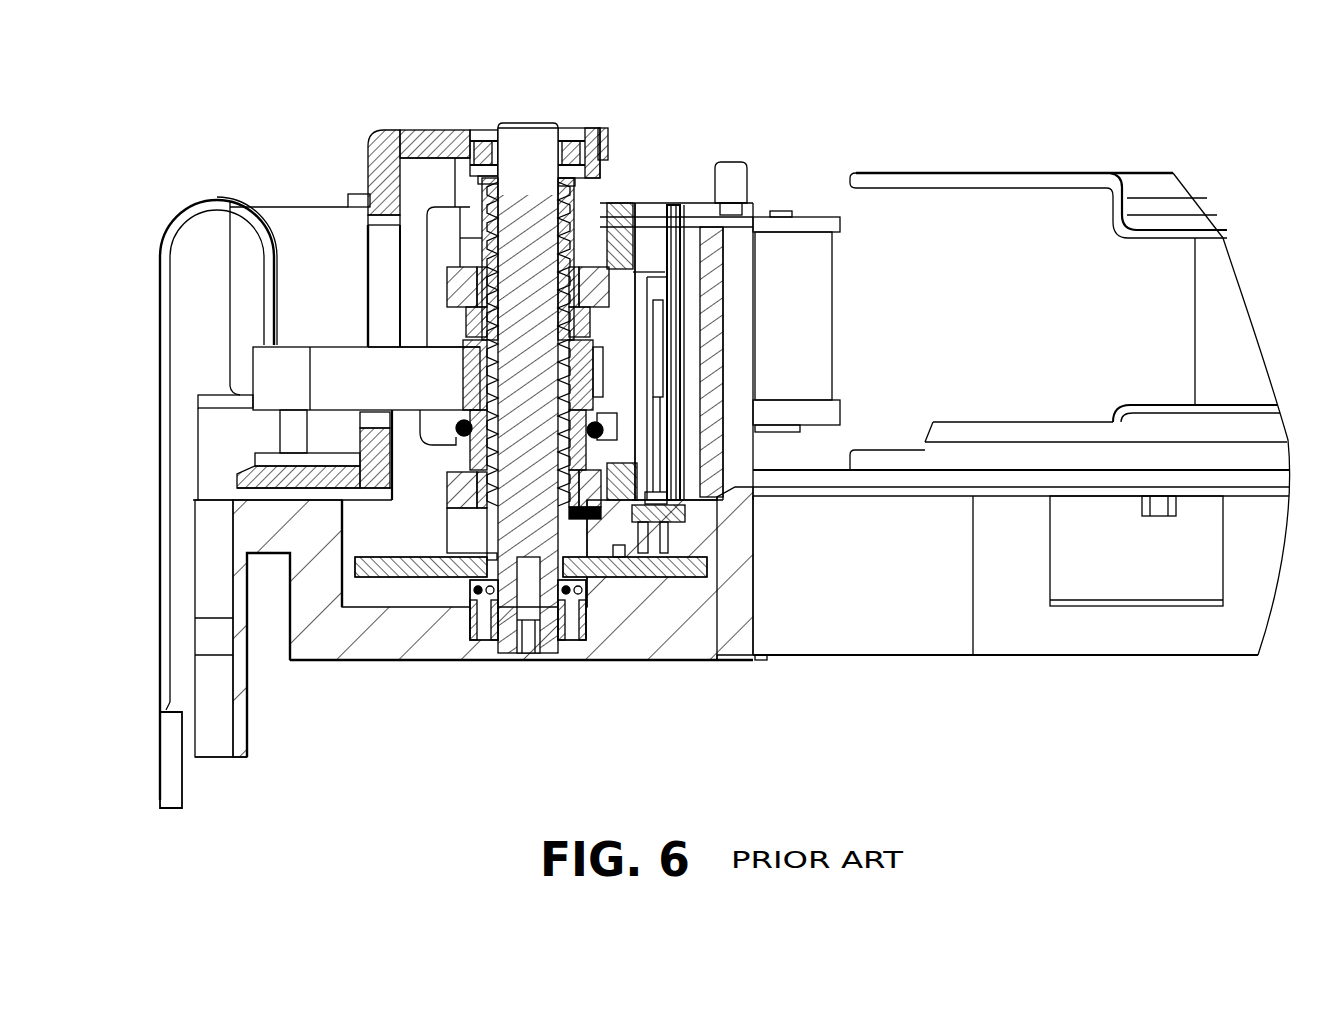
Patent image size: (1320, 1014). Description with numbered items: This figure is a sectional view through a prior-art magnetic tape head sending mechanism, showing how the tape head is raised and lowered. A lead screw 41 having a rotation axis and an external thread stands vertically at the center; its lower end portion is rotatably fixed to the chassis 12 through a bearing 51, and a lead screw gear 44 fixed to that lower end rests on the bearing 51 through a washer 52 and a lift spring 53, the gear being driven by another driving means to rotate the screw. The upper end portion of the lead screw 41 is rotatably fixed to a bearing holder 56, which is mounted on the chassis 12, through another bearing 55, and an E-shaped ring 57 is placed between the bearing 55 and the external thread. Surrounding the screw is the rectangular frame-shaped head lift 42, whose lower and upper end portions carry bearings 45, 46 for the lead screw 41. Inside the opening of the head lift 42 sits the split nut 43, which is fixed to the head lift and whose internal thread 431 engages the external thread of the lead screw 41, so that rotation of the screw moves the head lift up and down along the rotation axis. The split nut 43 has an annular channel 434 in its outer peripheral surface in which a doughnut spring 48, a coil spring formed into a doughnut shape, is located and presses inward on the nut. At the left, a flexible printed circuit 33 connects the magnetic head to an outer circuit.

The flexible printed circuit 33 is at (172, 230).
The bearing holder 56 is at (377, 140).
The head lift 42 is at (378, 160).
The bearing 46 is at (482, 264).
The lead screw 41 is at (528, 128).
The E-shaped ring 57 is at (553, 128).
The bearing 55 is at (590, 130).
The split nut 43 is at (596, 345).
The annular channel 434 is at (598, 400).
The chassis 12 is at (310, 622).
The internal thread 431 is at (453, 442).
The doughnut spring 48 is at (462, 432).
The lift spring 53 is at (468, 584).
The bearing 51 is at (492, 582).
The washer 52 is at (583, 606).
The bearing 45 is at (580, 506).
The lead screw gear 44 is at (756, 657).